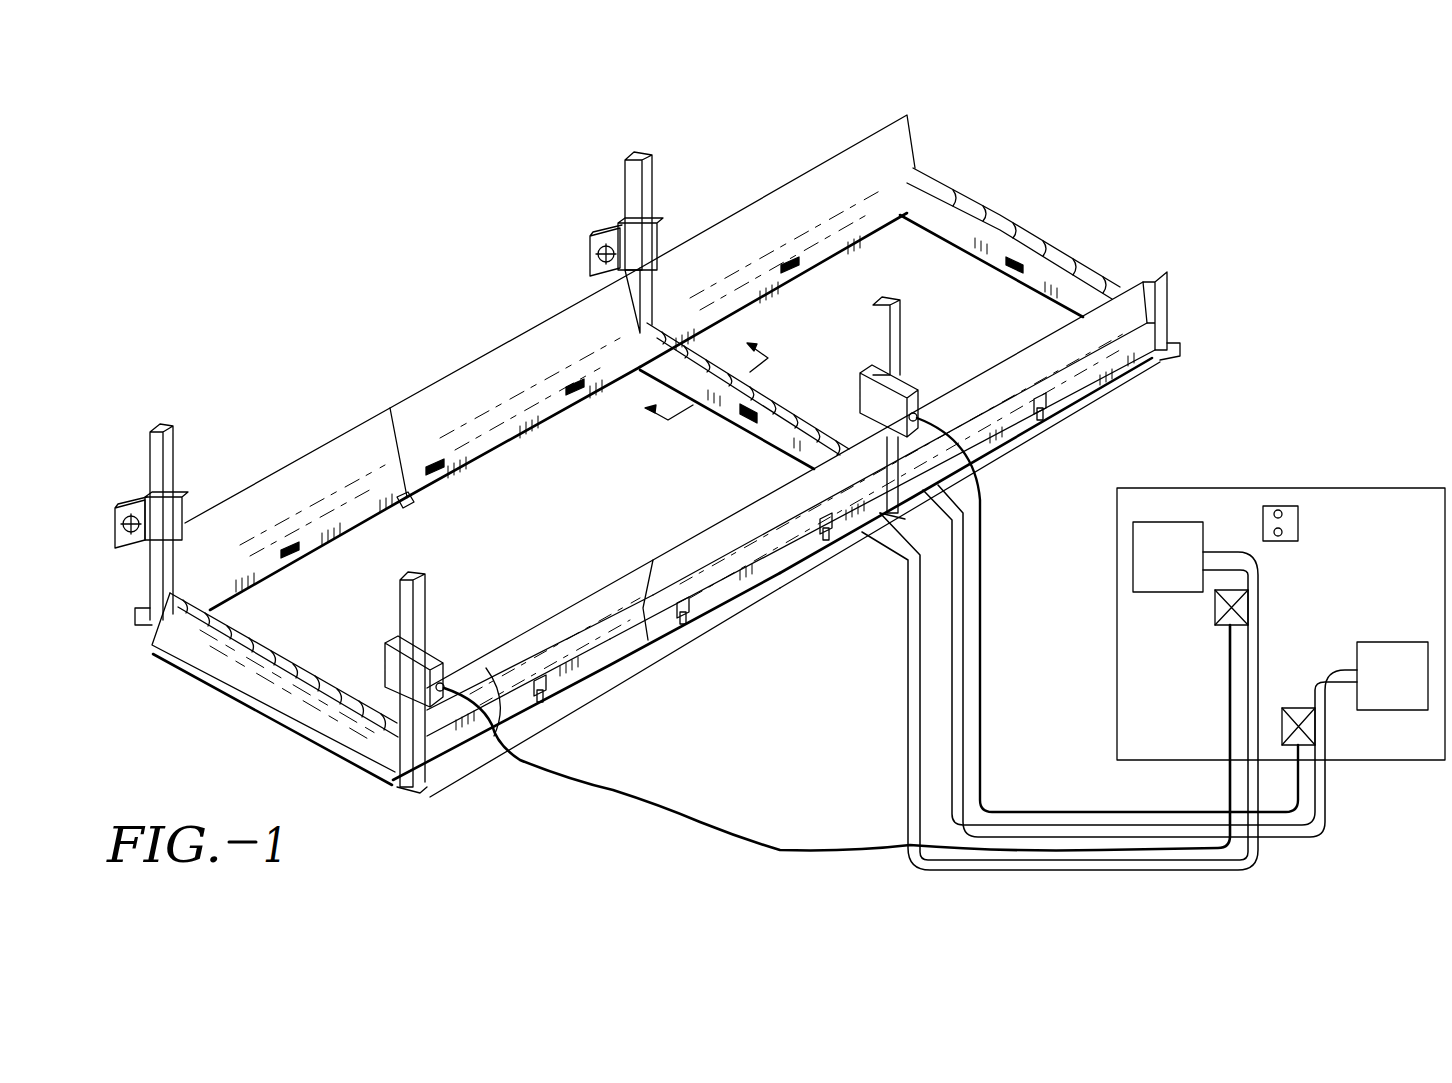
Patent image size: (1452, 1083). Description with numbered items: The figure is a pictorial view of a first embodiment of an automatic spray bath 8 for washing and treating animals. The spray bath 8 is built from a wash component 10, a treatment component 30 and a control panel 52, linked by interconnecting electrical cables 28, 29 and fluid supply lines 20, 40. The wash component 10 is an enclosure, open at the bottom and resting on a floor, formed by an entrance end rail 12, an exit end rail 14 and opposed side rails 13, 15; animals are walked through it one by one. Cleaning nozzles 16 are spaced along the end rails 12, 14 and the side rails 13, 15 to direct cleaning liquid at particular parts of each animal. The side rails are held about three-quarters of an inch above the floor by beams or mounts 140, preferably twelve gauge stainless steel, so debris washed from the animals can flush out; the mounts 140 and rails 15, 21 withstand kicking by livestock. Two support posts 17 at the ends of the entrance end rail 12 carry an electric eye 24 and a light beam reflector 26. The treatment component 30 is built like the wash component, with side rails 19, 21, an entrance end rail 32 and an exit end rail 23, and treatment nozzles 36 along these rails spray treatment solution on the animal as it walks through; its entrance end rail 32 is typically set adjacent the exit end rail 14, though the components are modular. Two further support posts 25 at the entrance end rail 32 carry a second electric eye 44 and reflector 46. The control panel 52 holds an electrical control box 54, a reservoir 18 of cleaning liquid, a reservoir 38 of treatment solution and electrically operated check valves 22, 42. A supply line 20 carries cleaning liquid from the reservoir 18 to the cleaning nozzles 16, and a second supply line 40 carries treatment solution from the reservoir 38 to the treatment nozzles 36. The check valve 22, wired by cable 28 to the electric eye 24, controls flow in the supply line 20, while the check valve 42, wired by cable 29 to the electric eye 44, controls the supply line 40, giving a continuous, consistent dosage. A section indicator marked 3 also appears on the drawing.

The automatic spray bath 8 is at (452, 132).
The wash component 10 is at (322, 375).
The entrance end rail 12 is at (262, 690).
The side rail 13 is at (422, 408).
The exit end rail 14 is at (777, 440).
The side rail 15 is at (478, 748).
The cleaning nozzles 16 is at (585, 412).
The support posts 17 is at (160, 423).
The reservoir 18 is at (1168, 522).
The side rail 19 is at (728, 242).
The supply line 20 is at (1243, 781).
The side rail 21 is at (970, 395).
The electrically operated check valve 22 is at (1213, 606).
The exit end rail 23 is at (957, 228).
The electric eye 24 is at (450, 640).
The support posts 25 is at (640, 150).
The light beam reflector 26 is at (108, 495).
The electrical cable 28 is at (1148, 845).
The electrical cable 29 is at (1305, 812).
The treatment component 30 is at (805, 158).
The entrance end rail 32 is at (776, 368).
The treatment nozzles 36 is at (812, 272).
The reservoir 38 is at (1392, 642).
The second supply line 40 is at (1330, 783).
The electrically operated check valve 42 is at (1298, 708).
The electric eye 44 is at (920, 380).
The light beam reflector 46 is at (586, 230).
The control panel 52 is at (1355, 490).
The electrical control box 54 is at (1300, 524).
The beams 140 is at (405, 505).
The section line FIG. 3 is at (696, 370).